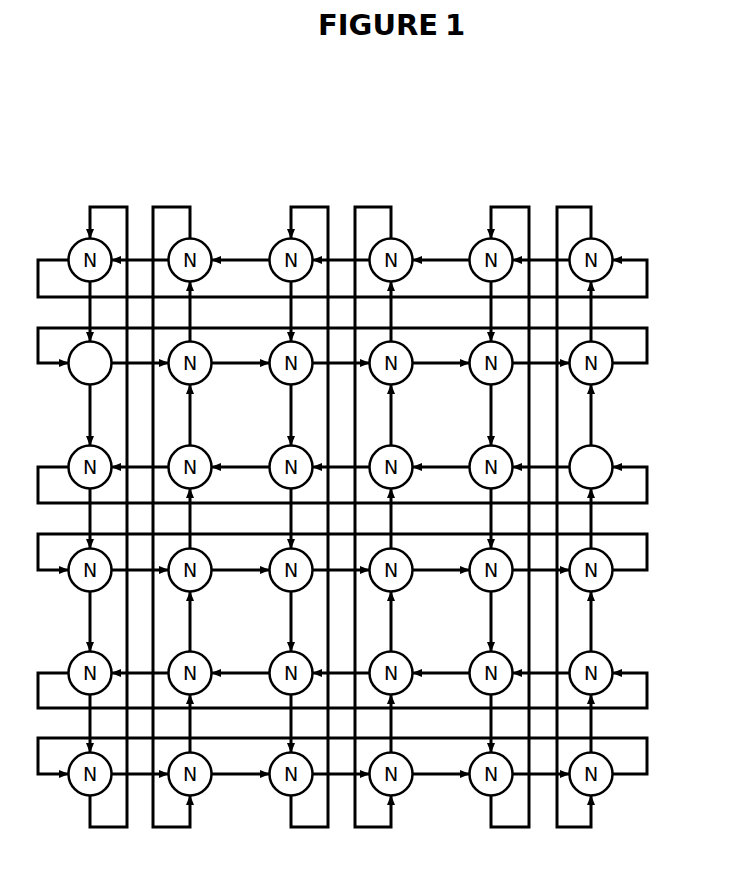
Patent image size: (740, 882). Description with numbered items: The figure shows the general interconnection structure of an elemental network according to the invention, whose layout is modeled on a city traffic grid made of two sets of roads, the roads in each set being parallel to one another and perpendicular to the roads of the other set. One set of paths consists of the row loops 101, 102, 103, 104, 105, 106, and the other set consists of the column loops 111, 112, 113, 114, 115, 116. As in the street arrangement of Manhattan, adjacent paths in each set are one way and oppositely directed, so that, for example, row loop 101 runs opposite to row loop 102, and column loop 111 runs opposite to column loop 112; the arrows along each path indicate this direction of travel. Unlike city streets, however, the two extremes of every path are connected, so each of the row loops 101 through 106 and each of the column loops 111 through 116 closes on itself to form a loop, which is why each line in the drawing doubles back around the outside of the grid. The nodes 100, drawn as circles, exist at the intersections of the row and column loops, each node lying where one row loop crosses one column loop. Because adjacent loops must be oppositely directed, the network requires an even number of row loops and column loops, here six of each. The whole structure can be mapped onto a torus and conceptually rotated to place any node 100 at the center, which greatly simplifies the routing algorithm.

The node 100 is at (72, 378).
The row loop 101 is at (104, 206).
The row loop 102 is at (172, 206).
The row loop 103 is at (305, 206).
The row loop 104 is at (373, 206).
The row loop 105 is at (507, 206).
The row loop 106 is at (574, 206).
The column loop 111 is at (649, 277).
The column loop 112 is at (649, 343).
The column loop 113 is at (649, 485).
The column loop 114 is at (649, 552).
The column loop 115 is at (649, 692).
The column loop 116 is at (649, 753).